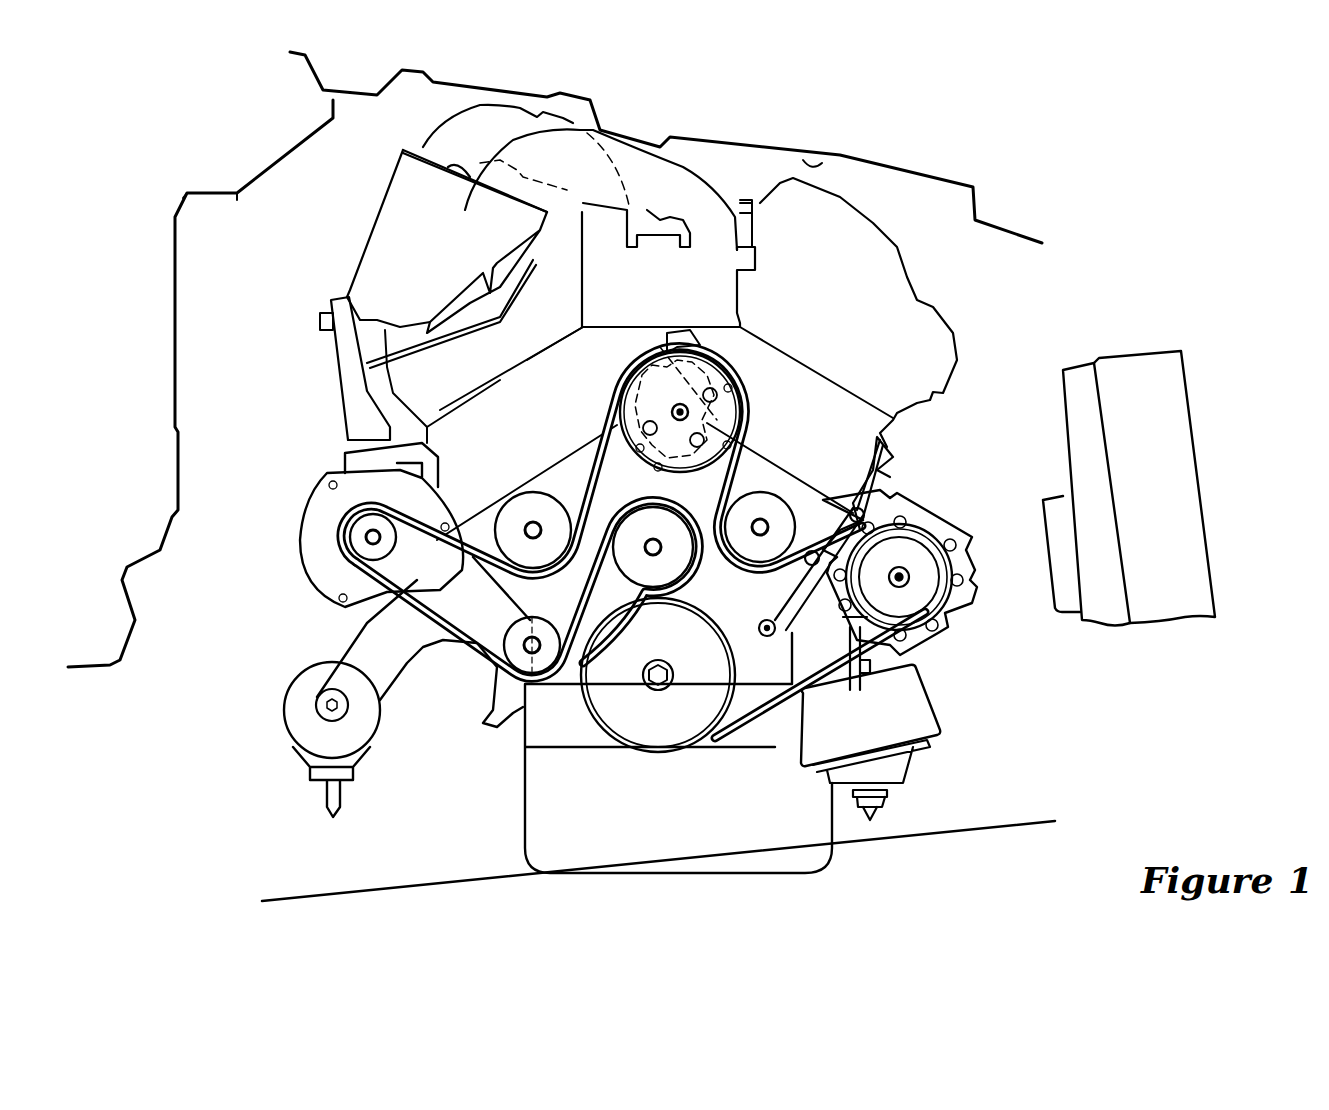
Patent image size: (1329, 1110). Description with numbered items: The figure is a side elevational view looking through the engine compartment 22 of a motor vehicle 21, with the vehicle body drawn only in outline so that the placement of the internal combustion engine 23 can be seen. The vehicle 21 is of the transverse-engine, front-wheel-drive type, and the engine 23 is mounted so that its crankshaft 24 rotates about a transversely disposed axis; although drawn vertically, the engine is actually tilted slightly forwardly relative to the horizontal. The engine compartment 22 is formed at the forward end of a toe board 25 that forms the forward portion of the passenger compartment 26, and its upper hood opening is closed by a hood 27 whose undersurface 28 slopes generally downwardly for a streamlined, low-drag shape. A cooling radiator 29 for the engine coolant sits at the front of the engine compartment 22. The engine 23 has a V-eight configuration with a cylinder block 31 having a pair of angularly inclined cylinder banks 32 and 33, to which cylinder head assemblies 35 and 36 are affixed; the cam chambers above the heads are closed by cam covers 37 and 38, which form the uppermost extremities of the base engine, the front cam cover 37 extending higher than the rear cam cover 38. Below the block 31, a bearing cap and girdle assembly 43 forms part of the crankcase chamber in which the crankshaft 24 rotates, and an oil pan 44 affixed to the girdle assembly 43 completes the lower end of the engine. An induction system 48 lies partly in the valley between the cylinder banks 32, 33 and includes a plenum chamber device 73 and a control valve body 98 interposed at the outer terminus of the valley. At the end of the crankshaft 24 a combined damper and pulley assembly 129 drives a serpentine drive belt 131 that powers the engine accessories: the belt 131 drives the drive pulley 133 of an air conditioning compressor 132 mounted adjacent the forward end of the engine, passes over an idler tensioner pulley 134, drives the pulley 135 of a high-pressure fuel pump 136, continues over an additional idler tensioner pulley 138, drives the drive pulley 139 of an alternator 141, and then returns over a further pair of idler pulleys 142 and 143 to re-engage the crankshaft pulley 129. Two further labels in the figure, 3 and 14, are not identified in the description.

The view direction arrow 3 is at (645, 68).
The ground line 14 is at (998, 826).
The vehicle 21 is at (1043, 190).
The engine compartment 22 is at (262, 368).
The internal combustion engine 23 is at (614, 125).
The crankshaft 24 is at (650, 655).
The toe board 25 is at (180, 470).
The passenger compartment 26 is at (128, 467).
The hood 27 is at (940, 181).
The undersurface 28 is at (835, 163).
The cooling radiator 29 is at (1080, 385).
The cylinder block 31 is at (567, 675).
The cylinder bank 32 is at (477, 487).
The cylinder bank 33 is at (773, 457).
The cylinder head assembly 35 is at (457, 417).
The cylinder head assembly 36 is at (845, 408).
The cam cover 37 is at (443, 307).
The cam cover 38 is at (837, 227).
The bearing cap and girdle assembly 43 is at (575, 732).
The oil pan 44 is at (808, 830).
The induction system 48 is at (400, 130).
The plenum chamber device 73 is at (403, 190).
The control valve body 98 is at (708, 300).
The combined damper and pulley assembly 129 is at (733, 700).
The serpentine drive belt 131 is at (740, 703).
The air conditioning compressor 132 is at (920, 650).
The drive pulley 133 is at (930, 590).
The idler tensioner pulley 134 is at (823, 503).
The pulley 135 is at (640, 443).
The high-pressure fuel pump 136 is at (588, 430).
The idler tensioner pulley 138 is at (550, 510).
The drive pulley 139 is at (355, 534).
The alternator 141 is at (312, 562).
The idler pulley 142 is at (497, 663).
The idler pulley 143 is at (683, 550).